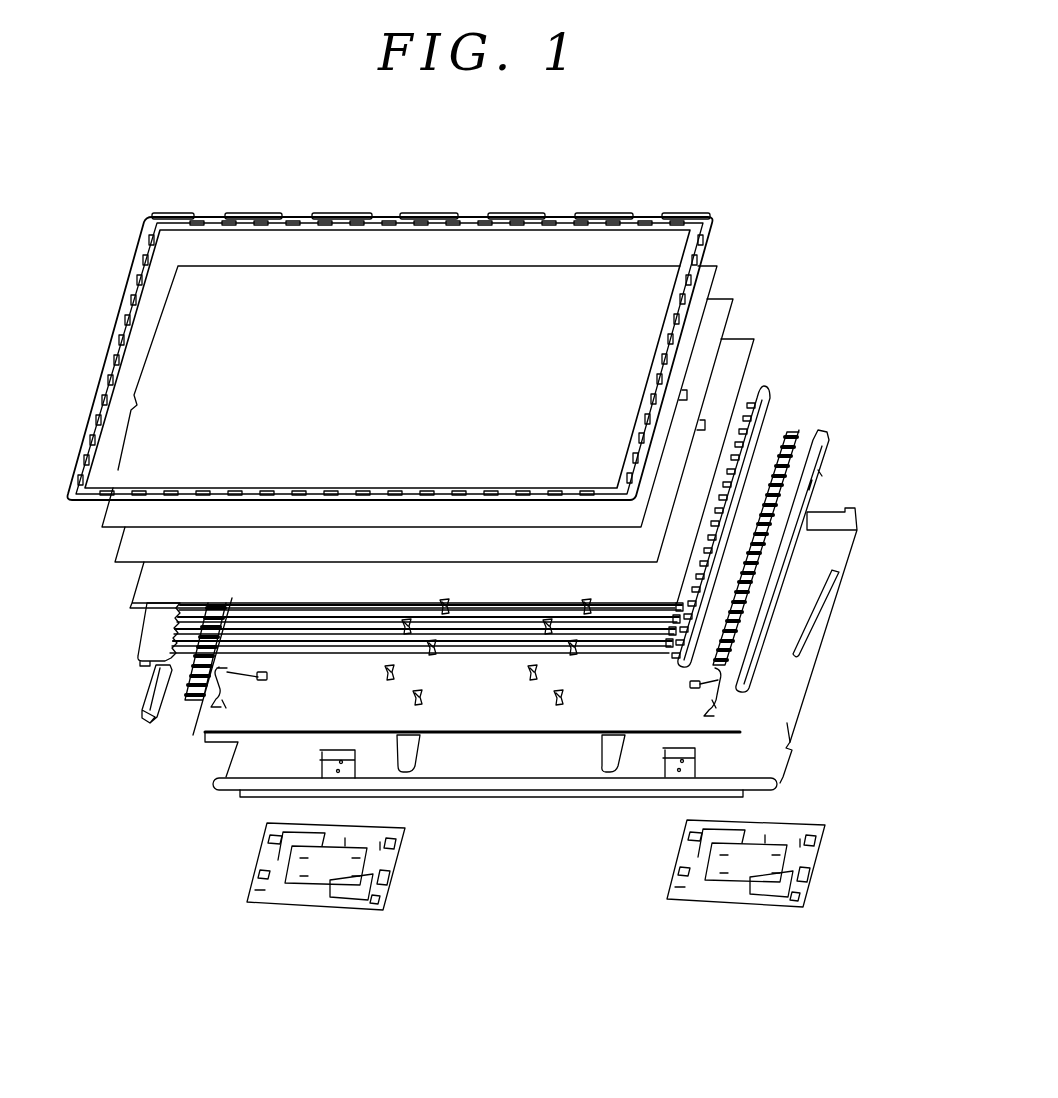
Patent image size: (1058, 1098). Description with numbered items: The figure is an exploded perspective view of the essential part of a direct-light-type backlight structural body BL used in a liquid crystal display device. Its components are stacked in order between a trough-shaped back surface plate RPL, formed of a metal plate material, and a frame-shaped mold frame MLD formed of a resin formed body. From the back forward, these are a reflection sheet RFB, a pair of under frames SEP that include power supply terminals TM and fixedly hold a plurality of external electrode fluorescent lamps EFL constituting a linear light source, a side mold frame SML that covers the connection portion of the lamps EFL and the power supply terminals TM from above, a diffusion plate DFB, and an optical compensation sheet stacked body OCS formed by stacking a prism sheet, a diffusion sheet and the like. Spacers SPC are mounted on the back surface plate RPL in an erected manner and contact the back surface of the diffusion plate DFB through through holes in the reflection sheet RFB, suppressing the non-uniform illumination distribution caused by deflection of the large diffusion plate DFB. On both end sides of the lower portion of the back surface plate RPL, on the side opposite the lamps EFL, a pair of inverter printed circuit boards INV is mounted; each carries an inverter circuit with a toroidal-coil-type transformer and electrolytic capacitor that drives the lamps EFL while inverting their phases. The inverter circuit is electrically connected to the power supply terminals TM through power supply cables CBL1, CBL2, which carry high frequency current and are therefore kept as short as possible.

The backlight structural body BL is at (101, 267).
The mold frame MLD is at (561, 221).
The optical compensation sheet stacked body OCS is at (725, 257).
The diffusion plate DFB is at (145, 581).
The side mold frame SML is at (766, 384).
The external electrode fluorescent lamps EFL is at (185, 660).
The under frames SEP is at (823, 476).
The power supply cable CBL2 is at (718, 700).
The back surface plate RPL is at (843, 511).
The power supply terminals TM is at (723, 665).
The power supply cable CBL1 is at (197, 708).
The reflection sheet RFB is at (478, 718).
The spacers SPC is at (557, 710).
The inverter printed circuit boards INV is at (292, 905).